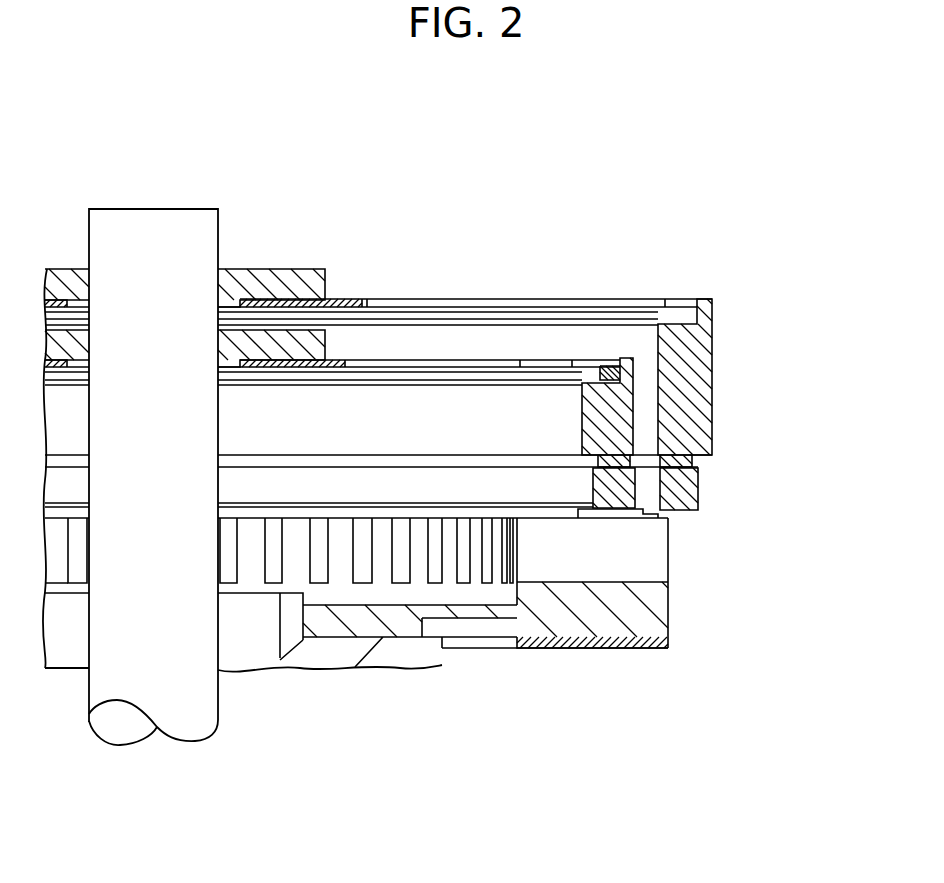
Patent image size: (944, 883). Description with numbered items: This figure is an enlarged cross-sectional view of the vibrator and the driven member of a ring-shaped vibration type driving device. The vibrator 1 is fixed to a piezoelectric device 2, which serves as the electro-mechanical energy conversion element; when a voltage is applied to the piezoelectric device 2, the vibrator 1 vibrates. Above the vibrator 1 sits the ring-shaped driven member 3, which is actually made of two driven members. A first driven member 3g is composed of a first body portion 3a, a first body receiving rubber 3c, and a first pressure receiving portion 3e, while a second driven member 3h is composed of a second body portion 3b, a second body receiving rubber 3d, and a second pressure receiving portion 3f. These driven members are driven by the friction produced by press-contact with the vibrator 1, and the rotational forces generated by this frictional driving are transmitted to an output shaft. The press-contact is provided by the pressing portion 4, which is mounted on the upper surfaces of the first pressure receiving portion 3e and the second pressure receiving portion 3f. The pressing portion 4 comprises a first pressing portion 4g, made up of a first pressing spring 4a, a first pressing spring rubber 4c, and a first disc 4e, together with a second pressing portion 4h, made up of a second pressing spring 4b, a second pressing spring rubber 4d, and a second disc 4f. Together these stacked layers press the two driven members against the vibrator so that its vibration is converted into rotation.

The vibrator 1 is at (578, 620).
The piezoelectric device 2 is at (532, 648).
The driven member 3 is at (830, 515).
The first body portion 3a is at (703, 470).
The second body portion 3b is at (618, 497).
The first body receiving rubber 3c is at (692, 463).
The second body receiving rubber 3d is at (625, 440).
The first pressure receiving portion 3e is at (707, 441).
The second pressure receiving portion 3f is at (670, 458).
The first driven member 3g is at (773, 480).
The second driven member 3h is at (773, 637).
The pressing portion 4 is at (830, 217).
The first pressing spring 4a is at (607, 300).
The second pressing spring 4b is at (447, 360).
The first pressing spring rubber 4c is at (697, 314).
The second pressing spring rubber 4d is at (603, 372).
The first disc 4e is at (325, 282).
The second disc 4f is at (343, 350).
The first pressing portion 4g is at (773, 182).
The second pressing portion 4h is at (773, 338).